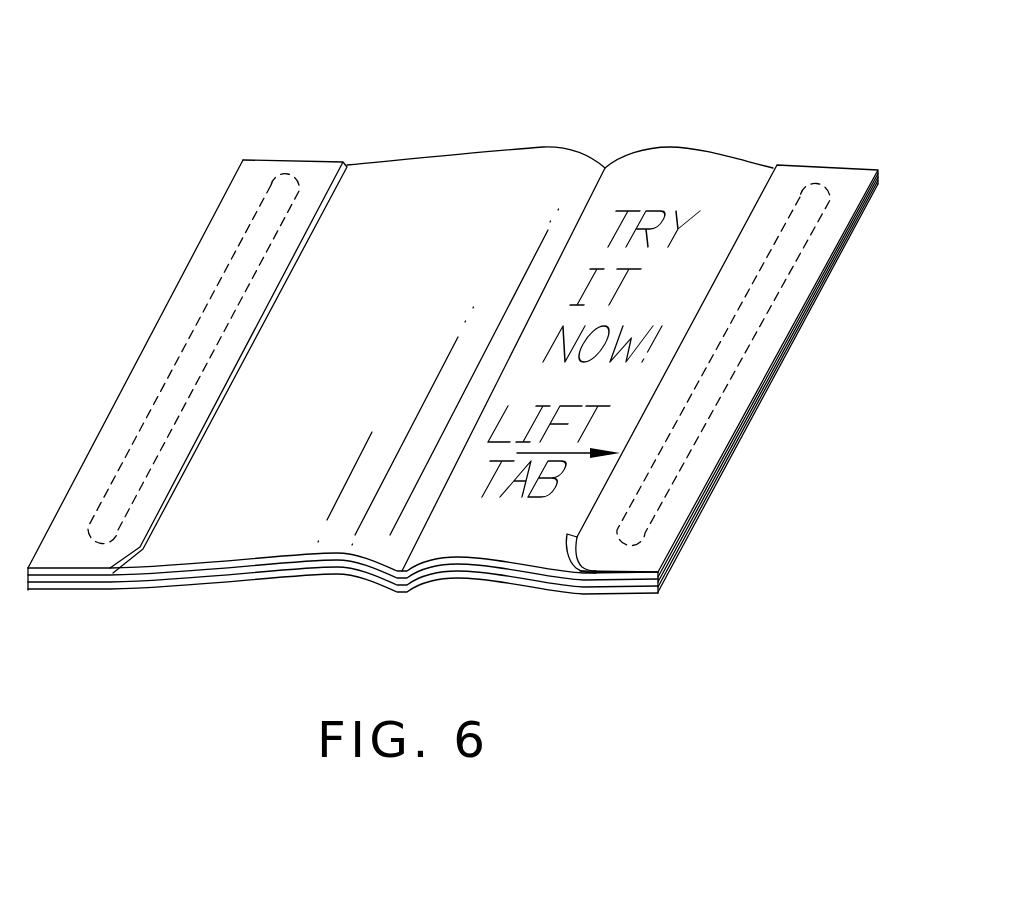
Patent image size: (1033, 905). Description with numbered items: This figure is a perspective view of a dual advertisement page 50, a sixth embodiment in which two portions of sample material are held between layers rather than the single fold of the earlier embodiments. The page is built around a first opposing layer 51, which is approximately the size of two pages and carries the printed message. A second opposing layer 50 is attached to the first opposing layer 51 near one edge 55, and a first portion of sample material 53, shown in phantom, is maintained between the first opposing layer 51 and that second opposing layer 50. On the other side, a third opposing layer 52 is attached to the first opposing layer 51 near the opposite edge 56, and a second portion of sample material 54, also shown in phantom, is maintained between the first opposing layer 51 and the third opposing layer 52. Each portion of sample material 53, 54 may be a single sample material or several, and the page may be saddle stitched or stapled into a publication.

The dual advertisement page 50 is at (609, 116).
The first opposing layer 51 is at (730, 173).
The third opposing layer 52 is at (310, 175).
The first portion of sample material 53 is at (743, 327).
The second portion of sample material 54 is at (230, 307).
The one edge of the first opposing layer 55 is at (840, 255).
The opposite edge of the first opposing layer 56 is at (200, 243).